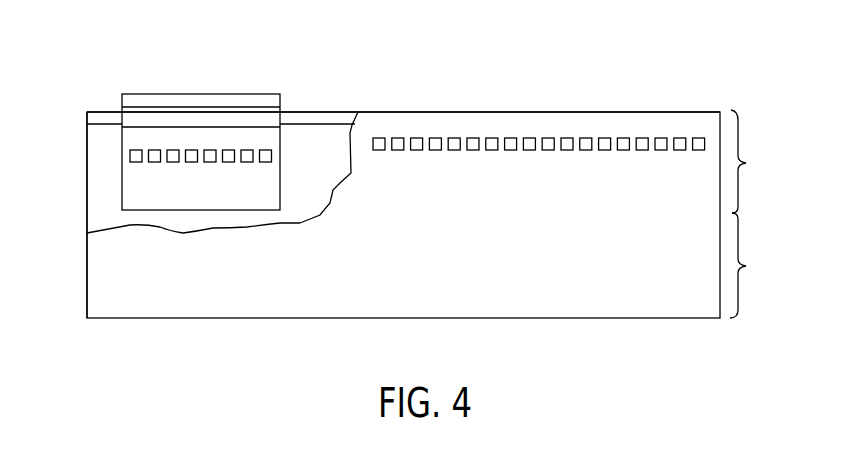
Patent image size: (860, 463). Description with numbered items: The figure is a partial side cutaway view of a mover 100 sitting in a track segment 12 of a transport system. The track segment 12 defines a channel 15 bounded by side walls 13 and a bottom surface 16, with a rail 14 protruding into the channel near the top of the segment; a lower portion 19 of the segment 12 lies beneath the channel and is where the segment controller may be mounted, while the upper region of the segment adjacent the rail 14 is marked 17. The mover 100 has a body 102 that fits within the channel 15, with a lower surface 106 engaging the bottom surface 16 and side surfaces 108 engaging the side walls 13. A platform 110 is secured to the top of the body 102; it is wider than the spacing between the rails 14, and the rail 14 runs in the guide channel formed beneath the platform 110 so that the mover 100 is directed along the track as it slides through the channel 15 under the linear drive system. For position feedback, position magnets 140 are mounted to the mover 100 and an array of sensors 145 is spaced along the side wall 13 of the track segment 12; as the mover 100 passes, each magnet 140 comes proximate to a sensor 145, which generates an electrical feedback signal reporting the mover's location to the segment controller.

The track segment 12 is at (686, 89).
The side wall 13 is at (326, 165).
The rail 14 is at (332, 112).
The channel 15 is at (102, 161).
The bottom surface 16 is at (297, 213).
The upper layer 17 is at (746, 163).
The lower portion 19 is at (746, 266).
The mover 100 is at (195, 93).
The body 102 is at (208, 193).
The lower surface 106 is at (163, 212).
The side surfaces 108 is at (192, 201).
The platform 110 is at (143, 102).
The position magnets 140 is at (228, 162).
The sensors 145 is at (548, 150).